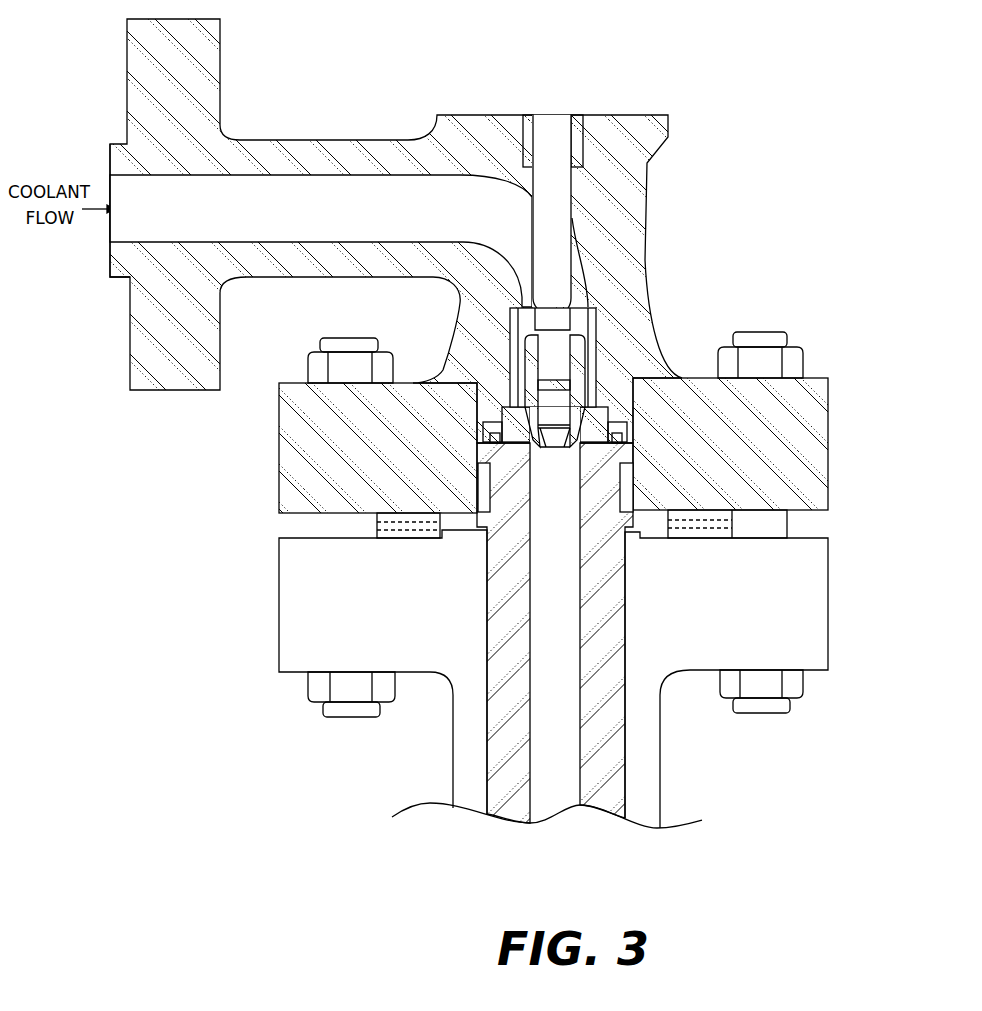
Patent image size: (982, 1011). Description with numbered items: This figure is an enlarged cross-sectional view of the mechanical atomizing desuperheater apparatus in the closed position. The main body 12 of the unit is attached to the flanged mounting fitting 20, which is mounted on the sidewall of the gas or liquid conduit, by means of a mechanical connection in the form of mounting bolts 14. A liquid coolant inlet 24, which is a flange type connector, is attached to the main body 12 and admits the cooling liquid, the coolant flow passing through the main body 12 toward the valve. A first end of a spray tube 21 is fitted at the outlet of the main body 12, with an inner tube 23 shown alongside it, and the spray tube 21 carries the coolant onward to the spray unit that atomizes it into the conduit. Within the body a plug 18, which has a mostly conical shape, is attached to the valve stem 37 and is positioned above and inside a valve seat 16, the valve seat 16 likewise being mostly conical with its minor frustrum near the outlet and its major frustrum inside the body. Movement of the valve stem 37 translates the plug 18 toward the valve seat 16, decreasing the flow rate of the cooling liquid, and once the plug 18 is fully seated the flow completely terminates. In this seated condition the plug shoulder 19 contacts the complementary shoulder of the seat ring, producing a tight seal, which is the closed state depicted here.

The main body 12 is at (647, 190).
The mounting bolts 14 is at (308, 364).
The valve seat 16 is at (625, 432).
The plug 18 is at (596, 355).
The plug shoulder 19 is at (583, 440).
The flanged mounting fitting 20 is at (829, 590).
The spray tube 21 is at (622, 758).
The inner tube 23 is at (487, 683).
The liquid coolant inlet 24 is at (112, 277).
The valve stem 37 is at (558, 221).